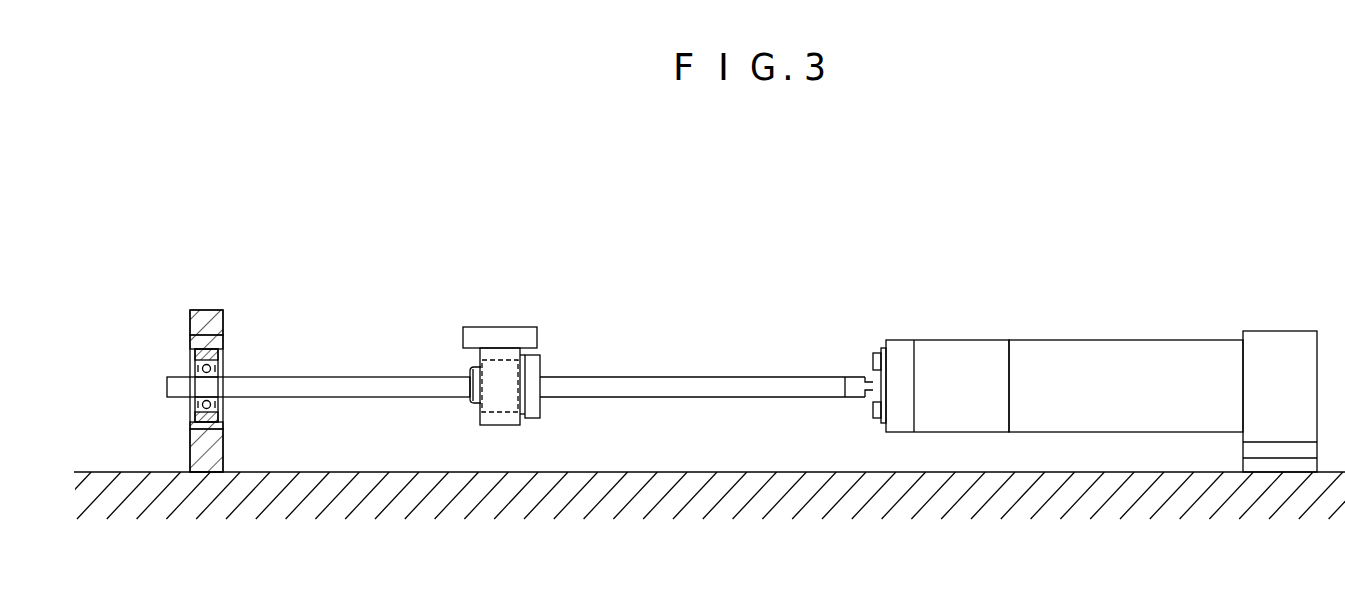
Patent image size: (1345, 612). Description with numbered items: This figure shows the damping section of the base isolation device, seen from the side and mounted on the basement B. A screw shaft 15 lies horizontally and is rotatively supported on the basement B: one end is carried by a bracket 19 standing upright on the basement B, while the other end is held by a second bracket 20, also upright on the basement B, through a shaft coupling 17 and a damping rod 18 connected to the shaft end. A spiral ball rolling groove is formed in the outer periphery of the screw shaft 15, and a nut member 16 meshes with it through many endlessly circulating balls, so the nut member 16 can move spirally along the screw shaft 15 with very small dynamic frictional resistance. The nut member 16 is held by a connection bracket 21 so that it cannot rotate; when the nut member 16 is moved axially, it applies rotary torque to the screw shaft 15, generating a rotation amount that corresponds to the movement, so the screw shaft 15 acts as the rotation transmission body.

The screw shaft 15 is at (702, 387).
The nut member 16 is at (533, 362).
The shaft coupling 17 is at (948, 360).
The damping rod 18 is at (1105, 360).
The bracket 19 is at (203, 317).
The bracket 20 is at (1270, 348).
The connection bracket 21 is at (480, 335).
The basement B is at (762, 472).